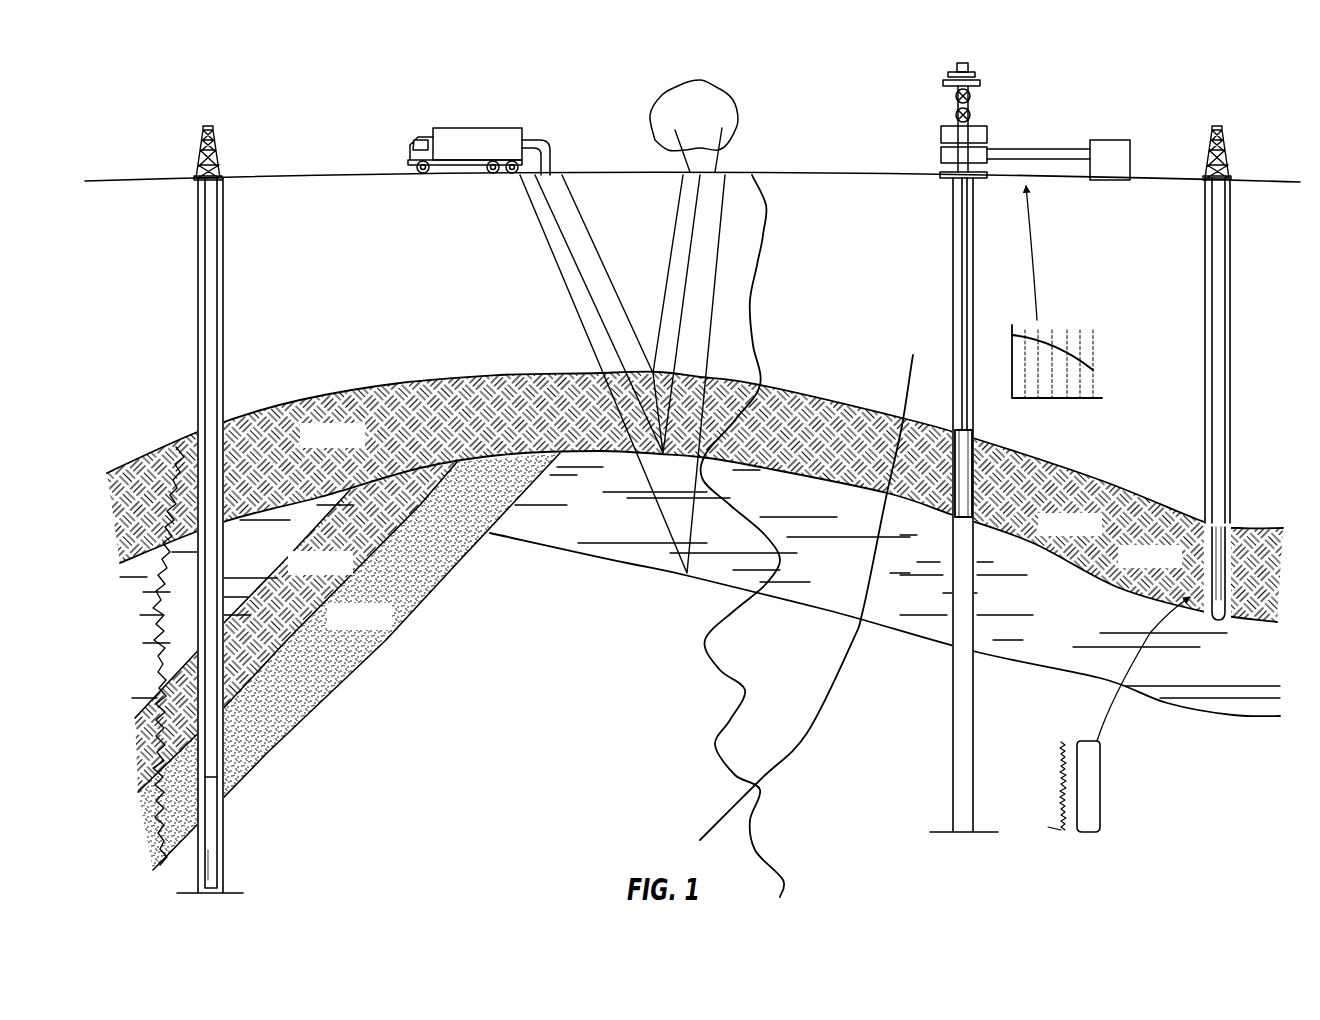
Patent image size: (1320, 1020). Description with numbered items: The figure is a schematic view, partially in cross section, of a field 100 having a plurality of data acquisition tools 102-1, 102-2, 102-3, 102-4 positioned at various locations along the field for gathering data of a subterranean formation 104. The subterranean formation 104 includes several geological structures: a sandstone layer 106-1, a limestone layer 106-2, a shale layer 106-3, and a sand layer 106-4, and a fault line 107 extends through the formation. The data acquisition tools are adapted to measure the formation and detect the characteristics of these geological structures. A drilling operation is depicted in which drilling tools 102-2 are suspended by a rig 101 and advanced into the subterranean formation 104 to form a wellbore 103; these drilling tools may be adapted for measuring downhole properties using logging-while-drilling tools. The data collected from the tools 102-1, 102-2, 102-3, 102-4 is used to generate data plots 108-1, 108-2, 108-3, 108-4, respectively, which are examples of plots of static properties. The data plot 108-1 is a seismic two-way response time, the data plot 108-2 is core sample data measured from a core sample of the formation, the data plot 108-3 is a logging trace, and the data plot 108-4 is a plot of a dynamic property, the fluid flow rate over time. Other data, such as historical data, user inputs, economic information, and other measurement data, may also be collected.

The field 100 is at (1160, 124).
The rig 101 is at (1230, 148).
The wellbore 103 is at (1232, 235).
The data acquisition tool 102-1 is at (435, 126).
The drilling tools 102-2 is at (1225, 557).
The data acquisition tool 102-3 is at (220, 836).
The data acquisition tool 102-4 is at (950, 512).
The subterranean formation 104 is at (546, 661).
The sandstone layer 106-1 is at (360, 447).
The limestone layer 106-2 is at (280, 555).
The shale layer 106-3 is at (348, 574).
The sand layer 106-4 is at (387, 628).
The fault line 107 is at (912, 368).
The data plot 108-1 is at (742, 698).
The data plot 108-2 is at (1063, 757).
The data plot 108-3 is at (160, 650).
The data plot 108-4 is at (1060, 398).